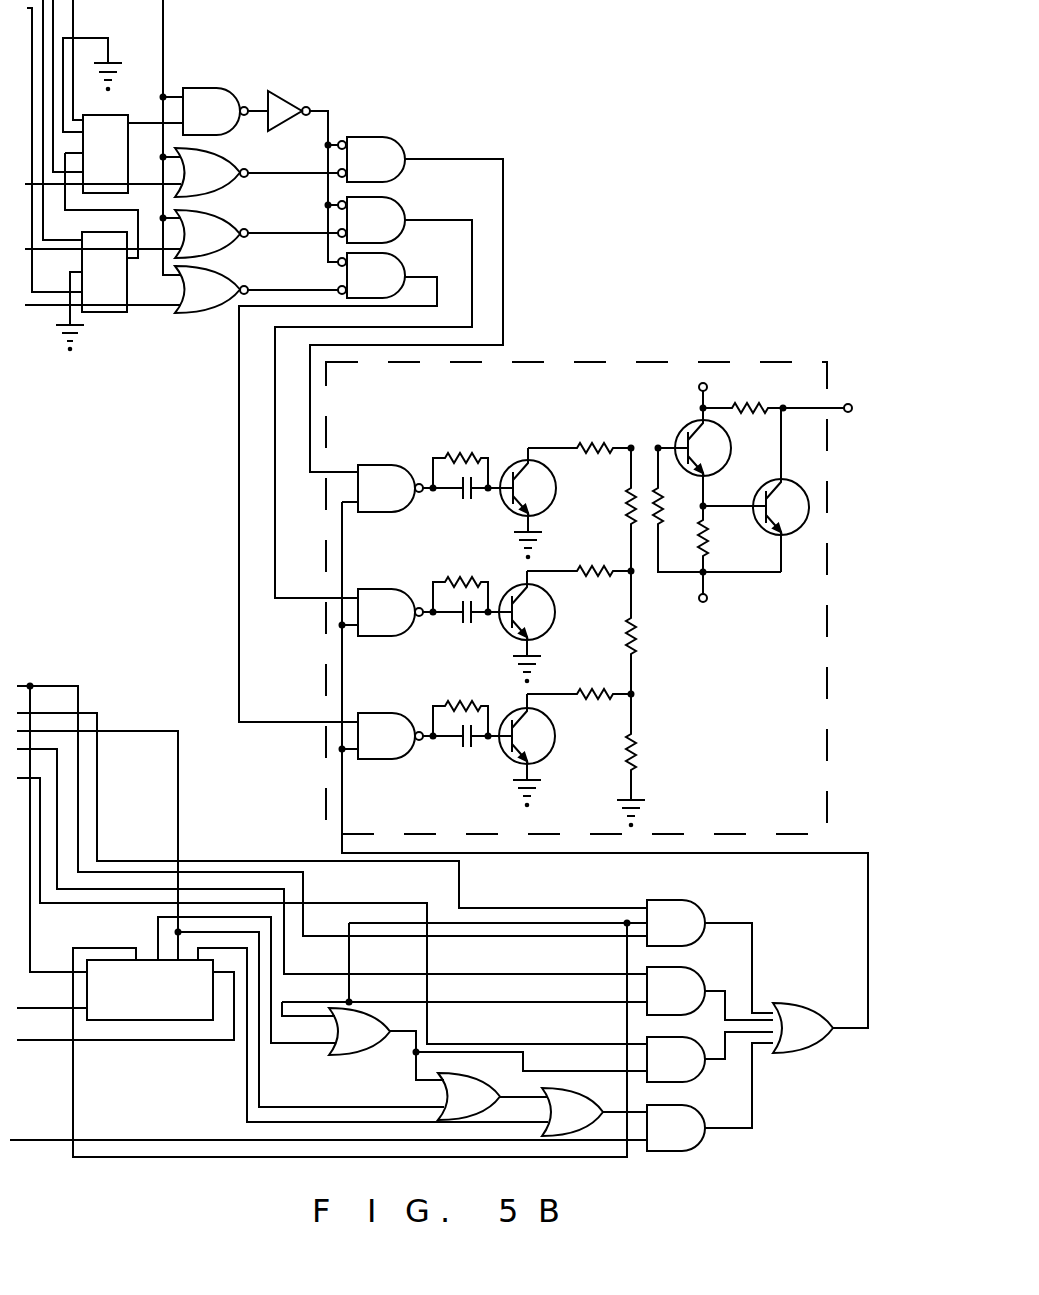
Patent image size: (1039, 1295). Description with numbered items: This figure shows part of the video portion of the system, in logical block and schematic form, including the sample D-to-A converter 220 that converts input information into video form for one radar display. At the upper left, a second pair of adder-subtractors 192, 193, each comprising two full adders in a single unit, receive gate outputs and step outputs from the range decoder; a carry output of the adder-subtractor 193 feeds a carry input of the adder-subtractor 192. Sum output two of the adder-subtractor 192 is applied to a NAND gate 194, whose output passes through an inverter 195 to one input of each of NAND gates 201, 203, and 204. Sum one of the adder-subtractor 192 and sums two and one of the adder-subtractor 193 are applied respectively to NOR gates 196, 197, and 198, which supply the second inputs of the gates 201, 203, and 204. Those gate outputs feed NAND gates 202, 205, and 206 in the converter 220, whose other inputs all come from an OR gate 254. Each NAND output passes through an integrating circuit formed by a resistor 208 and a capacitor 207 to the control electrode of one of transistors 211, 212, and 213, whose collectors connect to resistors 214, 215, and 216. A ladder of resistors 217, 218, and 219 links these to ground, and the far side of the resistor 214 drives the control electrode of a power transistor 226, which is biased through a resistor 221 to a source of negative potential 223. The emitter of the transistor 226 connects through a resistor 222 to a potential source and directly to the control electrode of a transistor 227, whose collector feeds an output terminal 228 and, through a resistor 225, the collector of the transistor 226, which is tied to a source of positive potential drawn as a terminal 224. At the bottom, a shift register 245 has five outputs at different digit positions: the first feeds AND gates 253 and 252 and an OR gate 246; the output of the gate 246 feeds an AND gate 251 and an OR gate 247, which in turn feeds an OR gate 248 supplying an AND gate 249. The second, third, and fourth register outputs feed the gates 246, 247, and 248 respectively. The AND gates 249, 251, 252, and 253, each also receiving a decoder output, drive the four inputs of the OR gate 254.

The adder-subtractor 192 is at (109, 120).
The adder-subtractor 193 is at (108, 312).
The NAND gate 194 is at (208, 88).
The inverter 195 is at (287, 111).
The NOR gate 196 is at (214, 168).
The NOR gate 197 is at (213, 228).
The NOR gate 198 is at (213, 286).
The NAND gate 201 is at (378, 143).
The NAND gate 203 is at (383, 206).
The NAND gate 204 is at (383, 266).
The D-to-A converter 220 is at (606, 370).
The NAND gate 202 is at (401, 479).
The NAND gate 205 is at (402, 604).
The NAND gate 206 is at (400, 727).
The capacitor 207 is at (463, 498).
The resistor 208 is at (460, 456).
The transistor 211 is at (556, 472).
The transistor 212 is at (554, 595).
The transistor 213 is at (554, 710).
The resistor 214 is at (590, 447).
The resistor 215 is at (582, 570).
The resistor 216 is at (578, 693).
The resistor 217 is at (630, 506).
The resistor 218 is at (630, 629).
The resistor 219 is at (630, 760).
The resistor 221 is at (662, 514).
The resistor 222 is at (706, 538).
The source of negative potential 223 is at (706, 601).
The terminal 224 is at (708, 388).
The resistor 225 is at (742, 413).
The power transistor 226 is at (695, 423).
The transistor 227 is at (795, 488).
The output terminal 228 is at (849, 404).
The shift register 245 is at (141, 958).
The OR gate 246 is at (348, 1053).
The OR gate 247 is at (461, 1083).
The OR gate 248 is at (565, 1095).
The AND gate 249 is at (693, 1141).
The AND gate 251 is at (687, 1074).
The AND gate 252 is at (681, 973).
The AND gate 253 is at (677, 908).
The OR gate 254 is at (793, 1011).